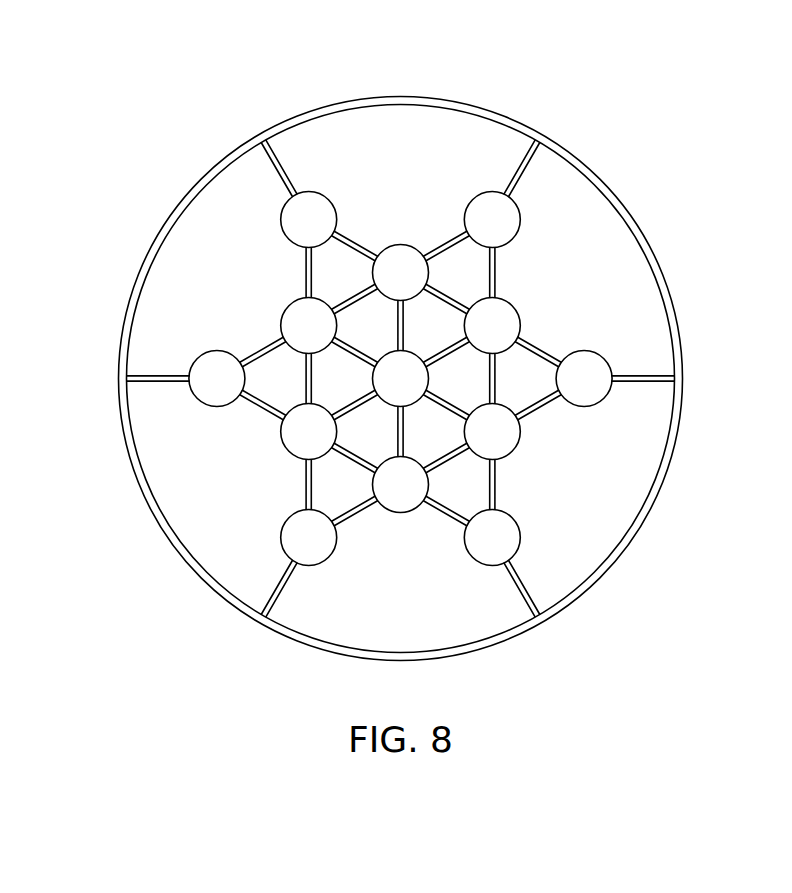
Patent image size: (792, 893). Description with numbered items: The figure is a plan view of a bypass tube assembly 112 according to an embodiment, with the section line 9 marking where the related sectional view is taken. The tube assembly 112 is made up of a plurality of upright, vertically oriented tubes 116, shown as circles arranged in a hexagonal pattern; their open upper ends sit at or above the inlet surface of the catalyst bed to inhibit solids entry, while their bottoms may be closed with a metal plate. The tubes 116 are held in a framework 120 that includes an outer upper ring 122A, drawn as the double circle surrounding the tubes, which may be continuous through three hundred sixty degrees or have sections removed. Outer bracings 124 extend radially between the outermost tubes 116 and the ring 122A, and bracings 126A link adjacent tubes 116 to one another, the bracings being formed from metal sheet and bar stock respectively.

The tube assembly 112 is at (275, 88).
The tubes 116 is at (336, 212).
The framework 120 is at (506, 272).
The upper ring 122A is at (662, 283).
The outer bracings 124 is at (647, 373).
The bracing 126A is at (537, 412).
The section line 9- 9 is at (688, 378).